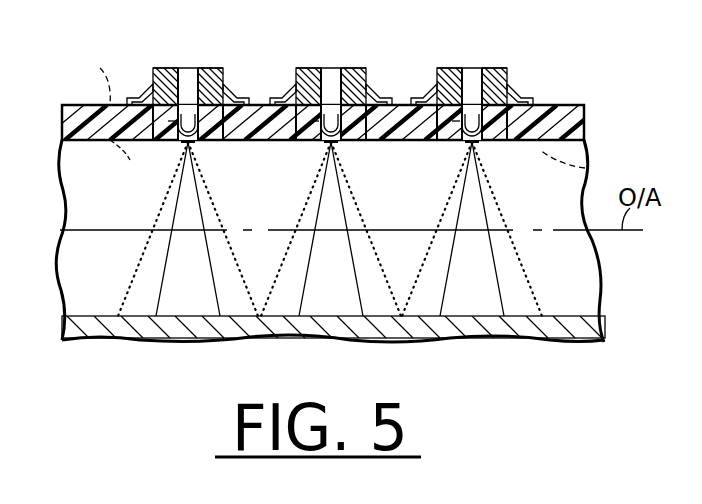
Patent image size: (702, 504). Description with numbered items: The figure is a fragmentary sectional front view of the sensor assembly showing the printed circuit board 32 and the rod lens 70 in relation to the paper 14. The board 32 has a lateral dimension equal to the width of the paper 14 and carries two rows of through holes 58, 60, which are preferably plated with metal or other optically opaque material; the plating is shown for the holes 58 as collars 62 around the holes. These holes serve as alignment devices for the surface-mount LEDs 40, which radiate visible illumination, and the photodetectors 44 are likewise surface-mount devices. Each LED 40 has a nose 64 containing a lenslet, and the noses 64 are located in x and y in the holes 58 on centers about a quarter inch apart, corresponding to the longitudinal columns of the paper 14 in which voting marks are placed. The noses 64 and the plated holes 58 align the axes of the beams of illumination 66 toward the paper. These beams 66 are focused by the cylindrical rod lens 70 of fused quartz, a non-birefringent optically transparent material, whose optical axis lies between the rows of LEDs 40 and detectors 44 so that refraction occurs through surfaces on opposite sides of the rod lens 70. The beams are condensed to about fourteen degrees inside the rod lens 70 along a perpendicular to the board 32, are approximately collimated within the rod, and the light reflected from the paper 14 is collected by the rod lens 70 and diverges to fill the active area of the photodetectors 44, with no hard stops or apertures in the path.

The paper 14 is at (380, 333).
The printed circuit board 32 is at (557, 103).
The LEDs 40 is at (207, 68).
The photodetectors 44 is at (178, 65).
The through holes 58 is at (180, 143).
The through holes 60 is at (255, 192).
The collars 62 is at (200, 143).
The noses 64 is at (132, 143).
The beams of illumination 66 is at (204, 295).
The rod lens 70 is at (80, 286).